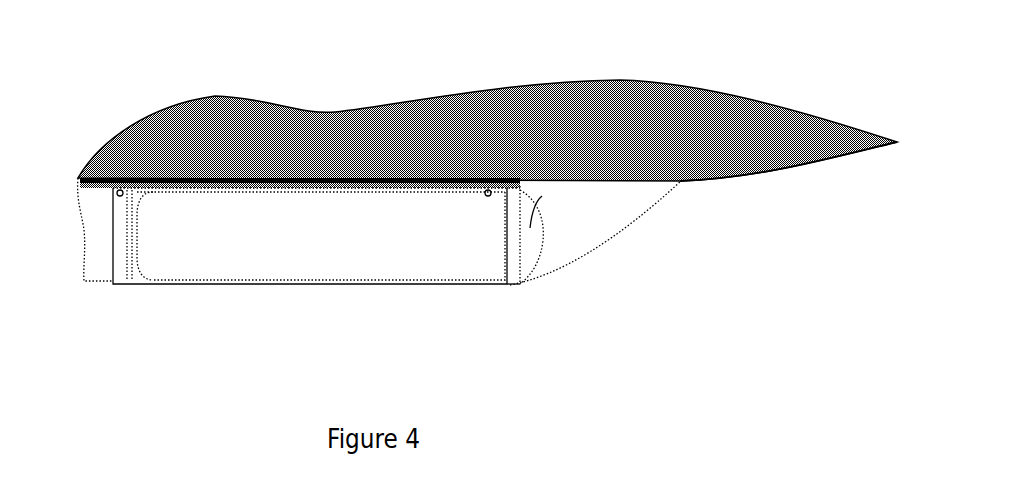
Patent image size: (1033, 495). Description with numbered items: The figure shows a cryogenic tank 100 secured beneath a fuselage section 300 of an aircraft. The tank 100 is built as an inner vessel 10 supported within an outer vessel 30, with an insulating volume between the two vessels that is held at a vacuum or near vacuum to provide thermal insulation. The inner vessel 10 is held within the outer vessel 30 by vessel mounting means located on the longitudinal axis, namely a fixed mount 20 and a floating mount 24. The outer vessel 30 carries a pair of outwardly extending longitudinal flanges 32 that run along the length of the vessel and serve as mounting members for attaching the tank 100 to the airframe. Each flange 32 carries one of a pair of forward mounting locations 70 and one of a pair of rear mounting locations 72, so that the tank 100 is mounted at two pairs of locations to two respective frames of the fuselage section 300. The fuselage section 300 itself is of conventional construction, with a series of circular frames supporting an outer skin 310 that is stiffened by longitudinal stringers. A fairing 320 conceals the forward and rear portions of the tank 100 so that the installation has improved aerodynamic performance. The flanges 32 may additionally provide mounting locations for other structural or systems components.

The inner vessel 10 is at (145, 270).
The fixed mount 20 is at (135, 243).
The floating mount 24 is at (530, 228).
The outer vessel 30 is at (533, 267).
The longitudinal flanges 32 is at (138, 192).
The forward mounting locations 70 is at (116, 191).
The rear mounting locations 72 is at (485, 191).
The tank 100 is at (370, 212).
The fuselage section 300 is at (503, 108).
The outer skin 310 is at (737, 177).
The fairing 320 is at (590, 255).